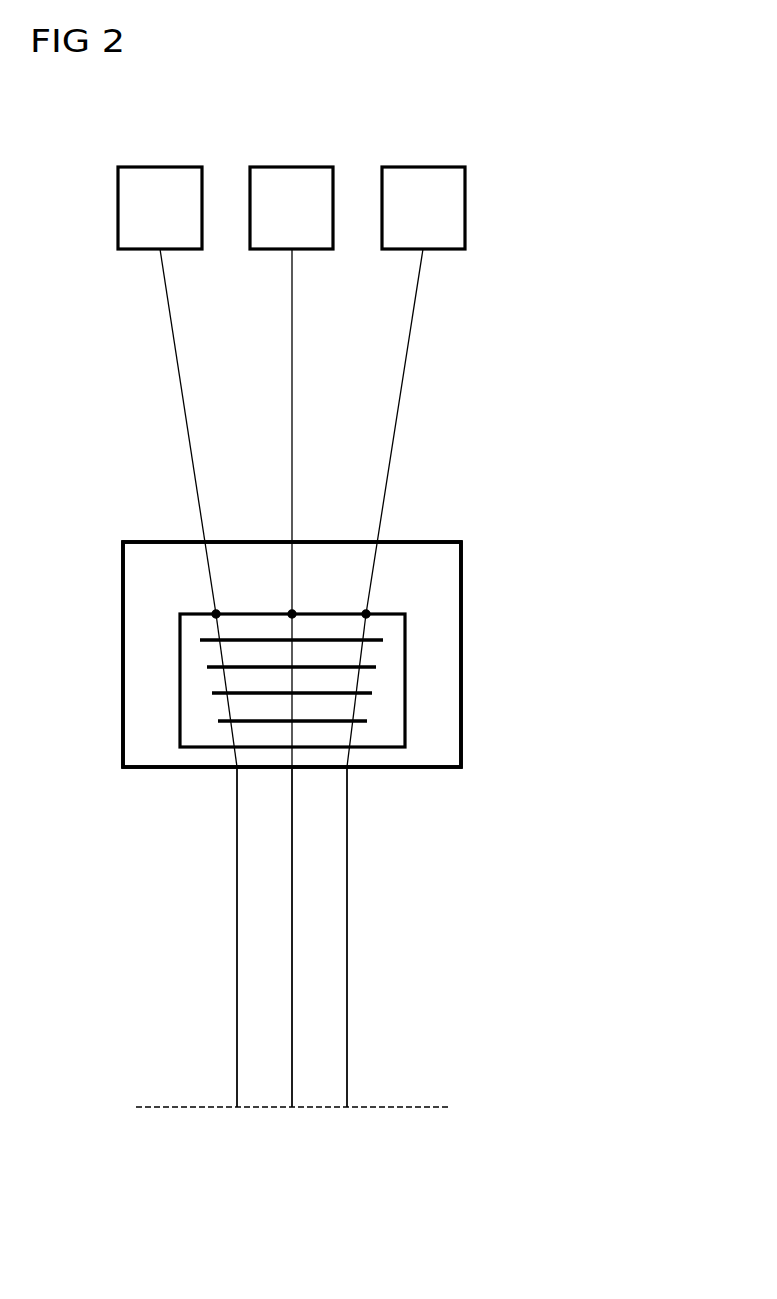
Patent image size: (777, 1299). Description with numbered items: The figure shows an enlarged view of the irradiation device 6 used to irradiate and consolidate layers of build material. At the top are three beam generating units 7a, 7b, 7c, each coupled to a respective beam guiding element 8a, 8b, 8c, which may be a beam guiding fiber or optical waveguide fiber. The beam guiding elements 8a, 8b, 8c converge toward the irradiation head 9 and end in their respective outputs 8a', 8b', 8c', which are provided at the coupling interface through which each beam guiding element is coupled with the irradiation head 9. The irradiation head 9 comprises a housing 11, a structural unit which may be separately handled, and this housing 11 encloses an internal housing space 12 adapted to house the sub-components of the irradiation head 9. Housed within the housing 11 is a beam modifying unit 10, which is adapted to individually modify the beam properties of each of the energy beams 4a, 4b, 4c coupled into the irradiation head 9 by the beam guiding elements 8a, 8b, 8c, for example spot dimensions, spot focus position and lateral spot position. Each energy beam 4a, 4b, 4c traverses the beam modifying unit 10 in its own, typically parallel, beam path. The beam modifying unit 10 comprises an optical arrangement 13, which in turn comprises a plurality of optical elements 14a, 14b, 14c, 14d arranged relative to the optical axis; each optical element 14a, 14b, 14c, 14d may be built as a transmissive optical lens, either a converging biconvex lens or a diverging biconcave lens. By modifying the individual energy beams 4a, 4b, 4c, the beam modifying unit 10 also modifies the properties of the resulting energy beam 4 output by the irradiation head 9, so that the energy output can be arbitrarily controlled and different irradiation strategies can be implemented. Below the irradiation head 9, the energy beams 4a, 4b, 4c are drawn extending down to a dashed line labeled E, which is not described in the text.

The beam generating unit 7a is at (159, 167).
The beam generating unit 7b is at (291, 167).
The beam generating unit 7c is at (423, 167).
The beam guiding element 8a is at (158, 431).
The beam guiding element 8b is at (255, 431).
The beam guiding element 8c is at (425, 431).
The output of beam guiding element 8a' is at (182, 632).
The output of beam guiding element 8b' is at (322, 632).
The output of beam guiding element 8c' is at (403, 632).
The irradiation device 6 is at (547, 569).
The housing space 12 is at (437, 579).
The irradiation head 9 is at (461, 634).
The housing 11 is at (292, 654).
The beam modifying unit 10 is at (405, 719).
The optical arrangement 13 is at (196, 682).
The optical element 14a is at (248, 638).
The optical element 14b is at (320, 667).
The optical element 14c is at (276, 695).
The optical element 14d is at (328, 722).
The resulting energy beam 4 is at (389, 932).
The energy beam 4a is at (237, 1027).
The energy beam 4b is at (292, 1078).
The energy beam 4c is at (347, 1027).
The detector plane E is at (318, 1107).